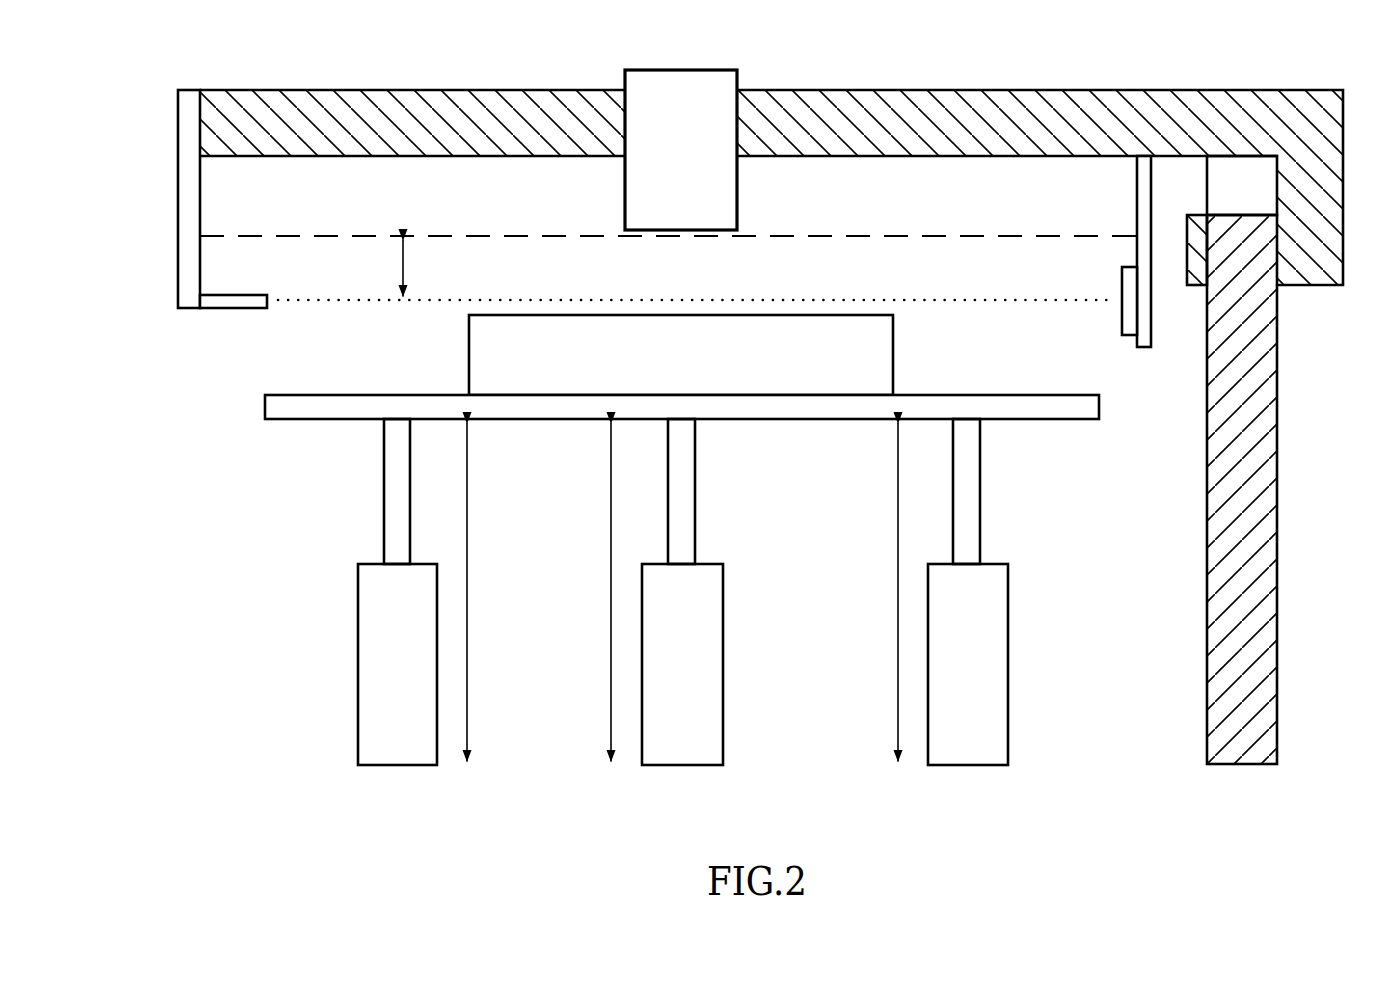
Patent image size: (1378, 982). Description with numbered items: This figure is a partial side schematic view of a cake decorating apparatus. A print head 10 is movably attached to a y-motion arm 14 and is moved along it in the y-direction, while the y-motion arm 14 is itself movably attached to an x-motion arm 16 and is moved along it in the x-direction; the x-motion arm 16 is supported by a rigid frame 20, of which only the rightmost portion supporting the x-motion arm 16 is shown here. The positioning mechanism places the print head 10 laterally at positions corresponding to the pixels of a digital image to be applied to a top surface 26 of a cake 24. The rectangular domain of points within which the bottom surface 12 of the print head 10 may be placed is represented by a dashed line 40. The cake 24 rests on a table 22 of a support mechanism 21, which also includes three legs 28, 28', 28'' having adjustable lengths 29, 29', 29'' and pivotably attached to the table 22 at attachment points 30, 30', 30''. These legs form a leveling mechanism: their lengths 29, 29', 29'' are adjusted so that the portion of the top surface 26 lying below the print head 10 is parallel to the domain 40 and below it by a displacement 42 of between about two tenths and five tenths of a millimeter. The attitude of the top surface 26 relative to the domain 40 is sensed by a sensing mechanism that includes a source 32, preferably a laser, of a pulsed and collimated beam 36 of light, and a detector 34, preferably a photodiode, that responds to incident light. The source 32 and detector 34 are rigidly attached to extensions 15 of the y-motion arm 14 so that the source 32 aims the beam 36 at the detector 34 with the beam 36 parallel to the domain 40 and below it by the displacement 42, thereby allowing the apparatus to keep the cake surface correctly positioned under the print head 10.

The print head 10 is at (665, 145).
The bottom surface 12 is at (697, 232).
The y-motion arm 14 is at (468, 103).
The extensions 15 is at (180, 188).
The x-motion arm 16 is at (1234, 176).
The rigid frame 20 is at (1258, 540).
The support mechanism 21 is at (1074, 607).
The table 22 is at (267, 404).
The cake 24 is at (668, 372).
The top surface 26 is at (893, 316).
The leg 28 is at (682, 664).
The leg 28' is at (397, 664).
The leg 28'' is at (968, 664).
The adjustable length 29 is at (566, 592).
The adjustable length 29' is at (501, 592).
The adjustable length 29'' is at (851, 592).
The attachment point 30 is at (722, 491).
The attachment point 30' is at (350, 491).
The attachment point 30'' is at (1018, 491).
The source 32 is at (228, 310).
The detector 34 is at (1122, 315).
The beam 36 is at (330, 303).
The dashed line (domain) 40 is at (290, 236).
The displacement 42 is at (410, 264).